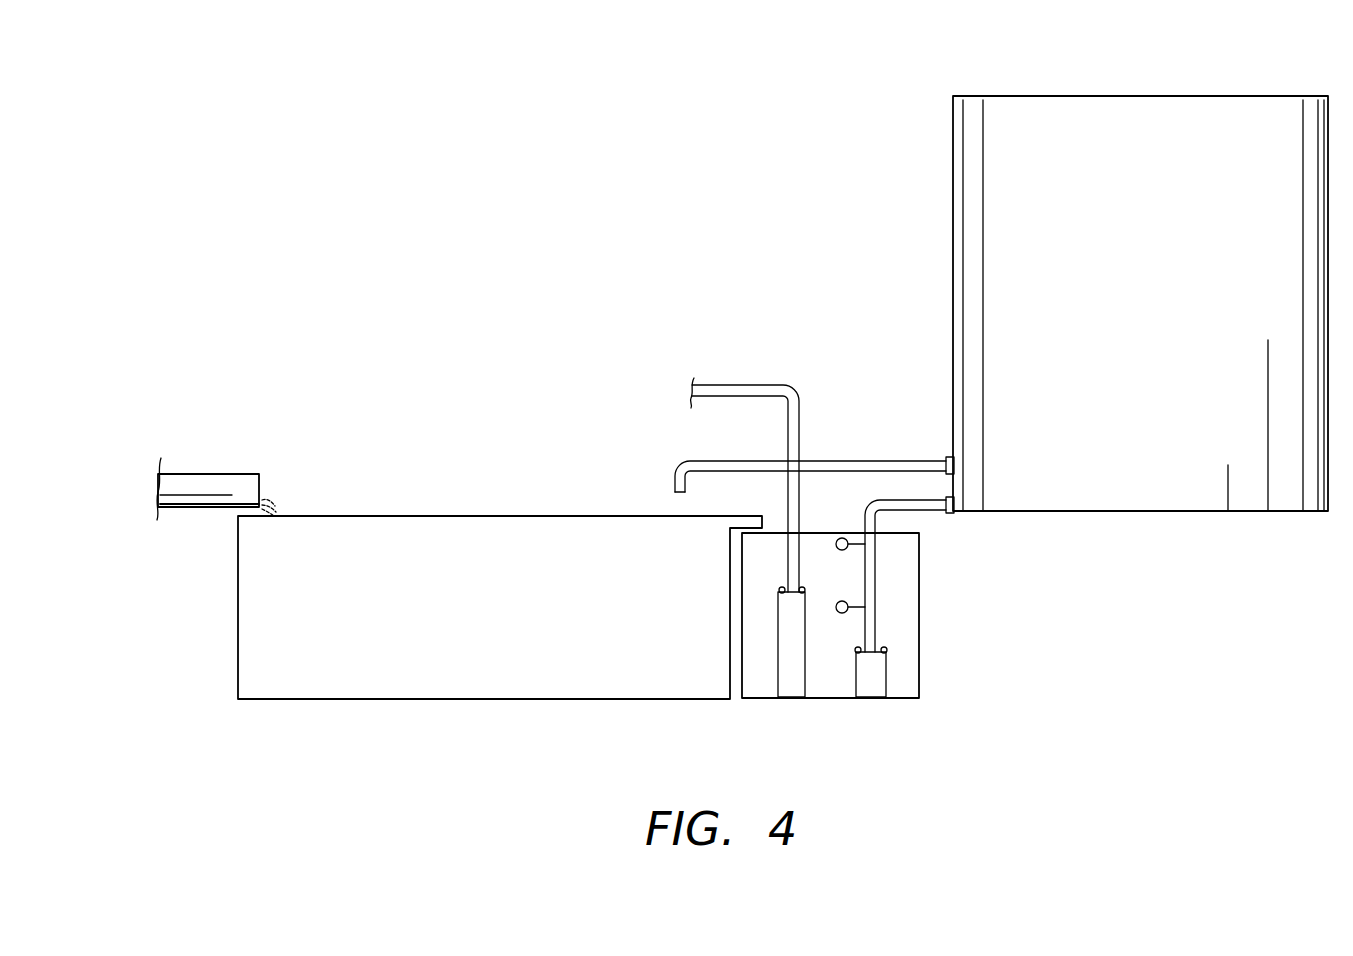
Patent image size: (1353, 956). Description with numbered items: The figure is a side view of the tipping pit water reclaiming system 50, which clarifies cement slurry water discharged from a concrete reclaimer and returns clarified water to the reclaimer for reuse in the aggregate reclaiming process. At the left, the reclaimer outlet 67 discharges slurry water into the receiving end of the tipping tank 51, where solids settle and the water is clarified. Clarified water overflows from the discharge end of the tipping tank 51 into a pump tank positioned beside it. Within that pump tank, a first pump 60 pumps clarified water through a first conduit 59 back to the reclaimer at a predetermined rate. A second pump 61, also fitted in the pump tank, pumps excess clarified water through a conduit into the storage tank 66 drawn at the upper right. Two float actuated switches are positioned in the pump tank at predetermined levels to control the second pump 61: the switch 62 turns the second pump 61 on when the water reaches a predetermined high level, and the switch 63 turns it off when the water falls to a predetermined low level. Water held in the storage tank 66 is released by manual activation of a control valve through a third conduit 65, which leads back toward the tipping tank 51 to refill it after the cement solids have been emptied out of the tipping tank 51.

The tipable pit water reclaiming system 50 is at (787, 168).
The tipping tank 51 is at (260, 627).
The conduit 59 is at (743, 385).
The pump 60 is at (807, 688).
The second pump 61 is at (876, 690).
The switch 62 is at (847, 611).
The switch 63 is at (847, 549).
The conduit 65 is at (668, 470).
The storage tank 66 is at (963, 268).
The outlet 67 is at (218, 478).